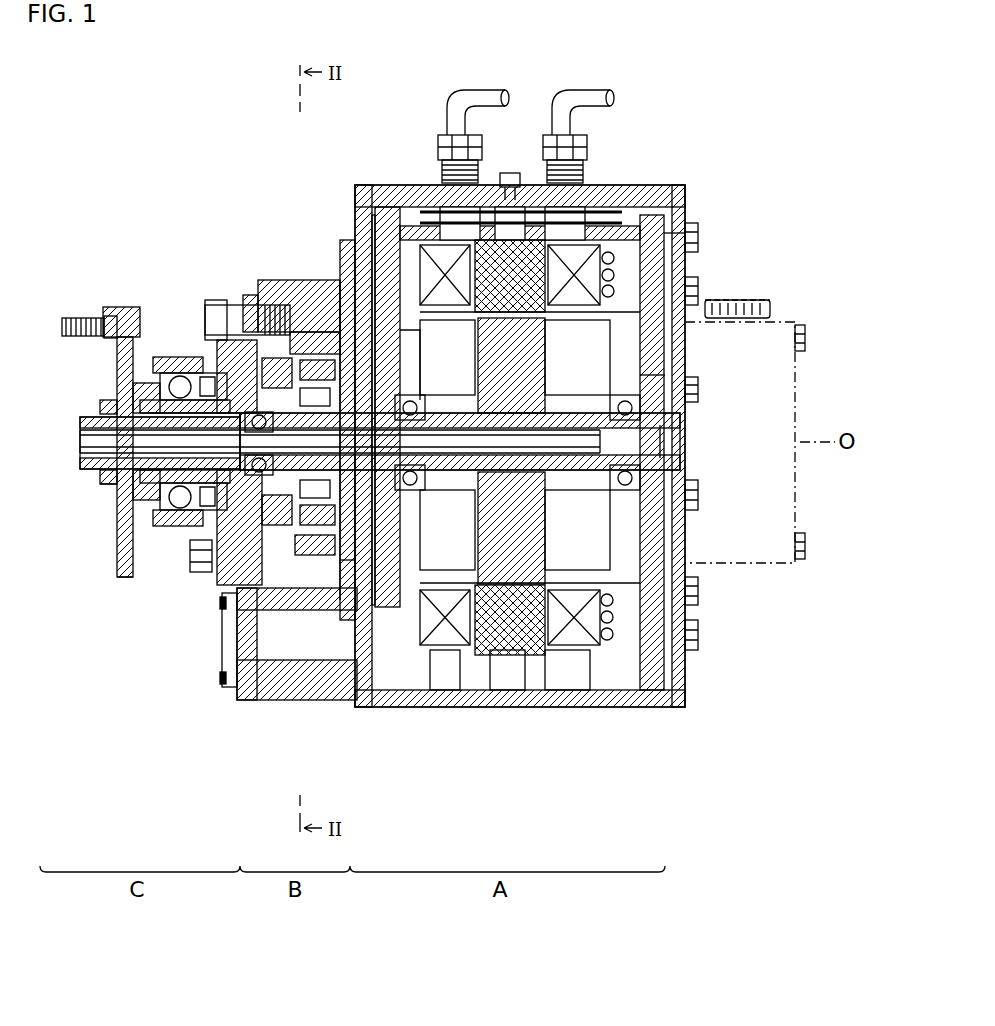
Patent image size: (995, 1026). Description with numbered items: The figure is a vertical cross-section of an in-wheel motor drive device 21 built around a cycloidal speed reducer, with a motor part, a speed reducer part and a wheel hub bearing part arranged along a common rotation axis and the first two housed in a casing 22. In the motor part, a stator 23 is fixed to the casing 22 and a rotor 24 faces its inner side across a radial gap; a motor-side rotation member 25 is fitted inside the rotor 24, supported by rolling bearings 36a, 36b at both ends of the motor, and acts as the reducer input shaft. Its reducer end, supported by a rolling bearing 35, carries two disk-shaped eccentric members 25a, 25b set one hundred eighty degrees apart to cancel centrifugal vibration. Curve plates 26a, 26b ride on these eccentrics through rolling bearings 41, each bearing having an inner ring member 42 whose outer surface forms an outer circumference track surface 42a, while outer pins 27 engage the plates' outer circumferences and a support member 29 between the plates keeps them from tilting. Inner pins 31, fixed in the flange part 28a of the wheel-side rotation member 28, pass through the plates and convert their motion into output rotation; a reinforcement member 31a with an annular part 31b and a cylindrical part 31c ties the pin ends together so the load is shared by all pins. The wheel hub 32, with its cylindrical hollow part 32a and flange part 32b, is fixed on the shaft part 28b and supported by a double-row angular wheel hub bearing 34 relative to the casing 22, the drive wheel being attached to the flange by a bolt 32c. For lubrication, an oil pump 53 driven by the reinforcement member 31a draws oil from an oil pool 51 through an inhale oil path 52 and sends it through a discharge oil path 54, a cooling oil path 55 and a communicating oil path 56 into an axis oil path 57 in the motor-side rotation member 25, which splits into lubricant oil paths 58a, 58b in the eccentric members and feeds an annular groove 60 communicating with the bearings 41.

The in-wheel motor drive device 21 is at (703, 770).
The casing 22 is at (362, 230).
The stator 23 is at (645, 295).
The rotor 24 is at (650, 318).
The motor-side rotation member 25 is at (685, 470).
The eccentric member 25a is at (300, 460).
The eccentric member 25b is at (150, 431).
The curve plate 26a is at (320, 275).
The curve plate 26b is at (293, 318).
The outer pins 27 is at (312, 612).
The wheel-side rotation member 28 is at (203, 297).
The flange part 28a is at (233, 297).
The shaft part 28b is at (150, 425).
The support member 29 is at (307, 270).
The inner pins 31 is at (270, 313).
The reinforcement member 31a is at (385, 300).
The annular part 31b is at (347, 240).
The cylindrical part 31c is at (665, 376).
The wheel hub 32 is at (117, 530).
The cylindrical hollow part 32a is at (100, 491).
The flange part 32b is at (129, 578).
The bolt 32c is at (77, 317).
The wheel hub bearing 34 is at (185, 377).
The rolling bearing 35 is at (200, 562).
The rolling bearing 36a is at (630, 412).
The rolling bearing 36b is at (503, 630).
The rolling bearing 41 is at (356, 310).
The inner ring member 42 is at (447, 633).
The outer circumference track surface 42a is at (355, 663).
The oil pool 51 is at (300, 640).
The inhale oil path 52 is at (346, 680).
The oil pump 53 is at (397, 320).
The discharge oil path 54 is at (378, 307).
The cooling oil path 55 is at (577, 220).
The communicating oil path 56 is at (698, 236).
The axis oil path 57 is at (650, 435).
The lubricant oil path 58a is at (660, 448).
The lubricant oil path 58b is at (330, 440).
The annular groove 60 is at (215, 380).